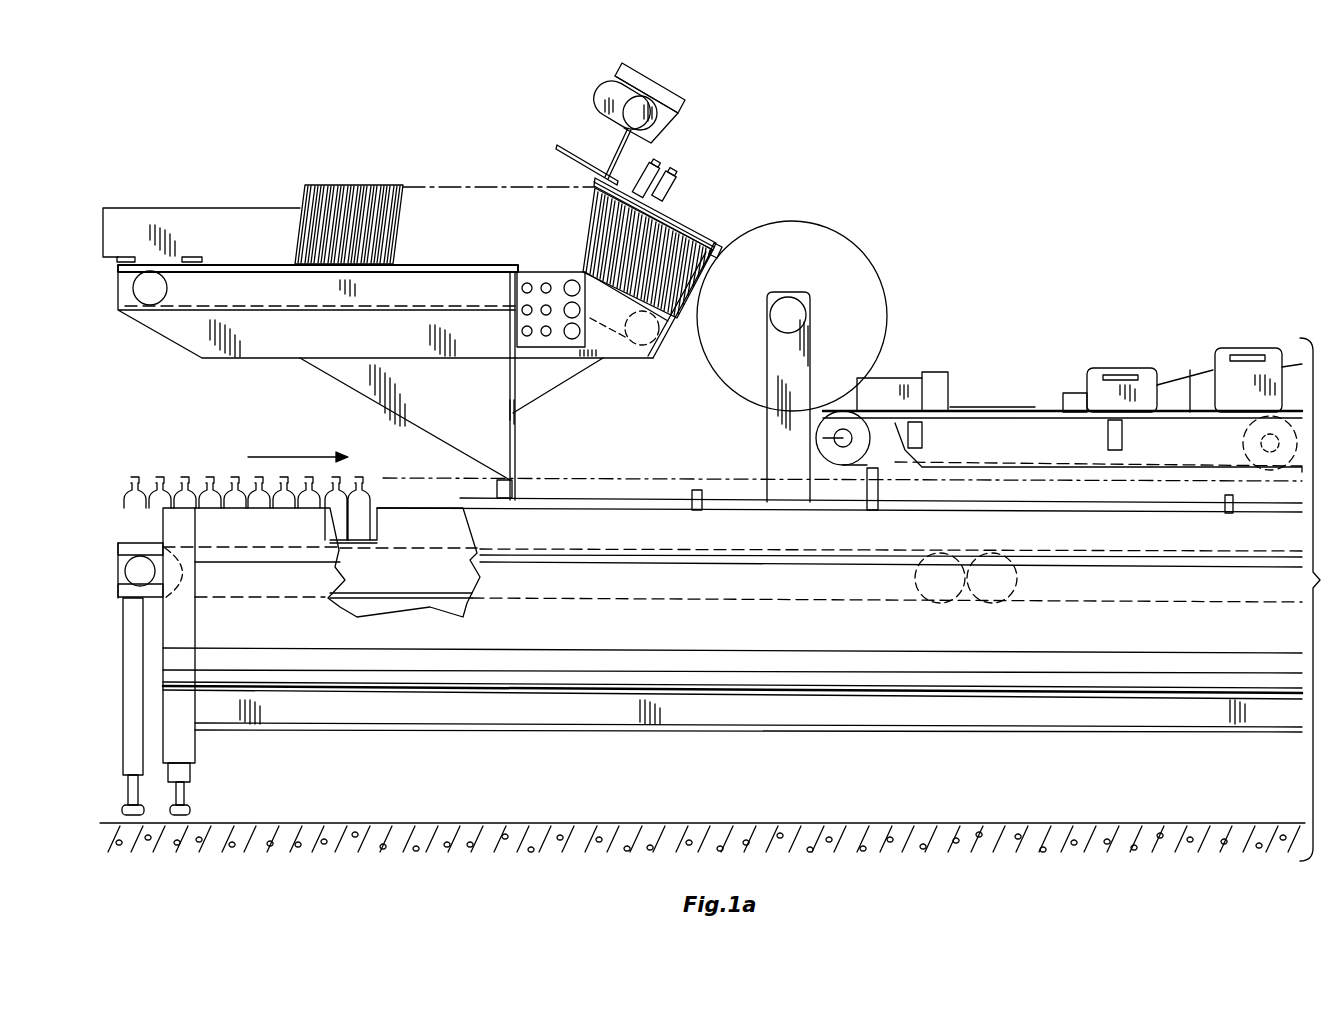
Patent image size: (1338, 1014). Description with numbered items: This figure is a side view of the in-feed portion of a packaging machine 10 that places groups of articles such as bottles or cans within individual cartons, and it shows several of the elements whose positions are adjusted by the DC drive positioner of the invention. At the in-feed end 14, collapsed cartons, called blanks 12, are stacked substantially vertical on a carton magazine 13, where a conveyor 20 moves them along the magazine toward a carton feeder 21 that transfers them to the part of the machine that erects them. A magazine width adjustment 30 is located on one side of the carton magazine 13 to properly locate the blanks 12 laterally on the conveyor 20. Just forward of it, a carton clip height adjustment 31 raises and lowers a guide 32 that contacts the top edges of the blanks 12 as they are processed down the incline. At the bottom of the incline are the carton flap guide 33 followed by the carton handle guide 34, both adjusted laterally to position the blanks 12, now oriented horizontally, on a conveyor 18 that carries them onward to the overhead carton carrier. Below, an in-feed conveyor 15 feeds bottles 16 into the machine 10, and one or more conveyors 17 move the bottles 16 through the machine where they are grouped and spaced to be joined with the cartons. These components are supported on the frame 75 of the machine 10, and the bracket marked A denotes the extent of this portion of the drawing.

The packaging machine 10 is at (868, 150).
The carton blank 12 is at (397, 187).
The carton magazine 13 is at (333, 113).
The in-feed end 14 is at (120, 415).
The in-feed conveyor 15 is at (150, 573).
The bottles 16 is at (207, 477).
The conveyor 17 is at (712, 603).
The conveyor 18 is at (825, 435).
The conveyor 20 is at (468, 303).
The carton feeder 21 is at (887, 253).
The magazine width adjustment 30 is at (222, 218).
The carton clip height adjustment 31 is at (698, 98).
The guide 32 is at (707, 230).
The carton flap guide 33 is at (888, 378).
The carton handle guide 34 is at (938, 372).
The frame 75 is at (1005, 720).
The section A is at (1318, 599).